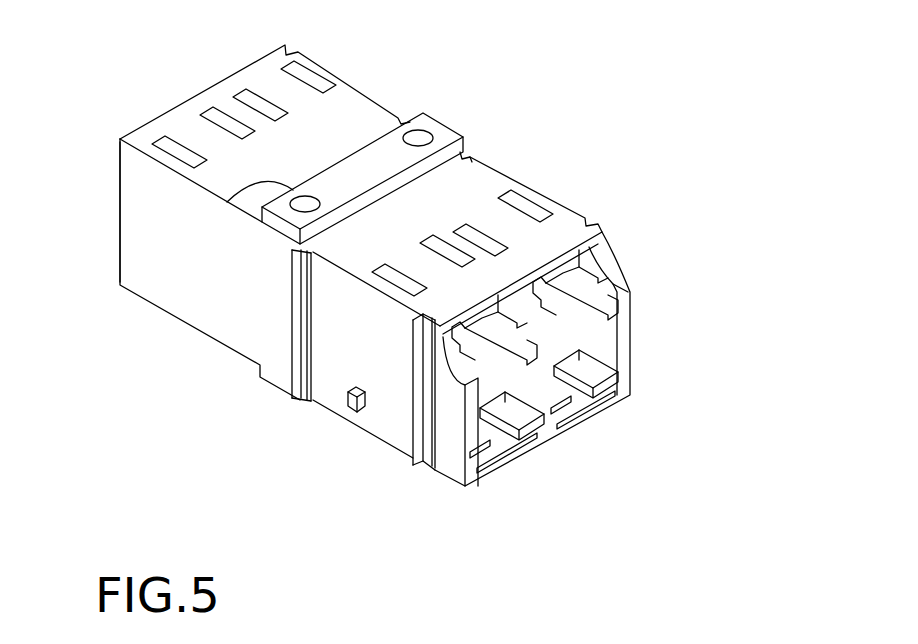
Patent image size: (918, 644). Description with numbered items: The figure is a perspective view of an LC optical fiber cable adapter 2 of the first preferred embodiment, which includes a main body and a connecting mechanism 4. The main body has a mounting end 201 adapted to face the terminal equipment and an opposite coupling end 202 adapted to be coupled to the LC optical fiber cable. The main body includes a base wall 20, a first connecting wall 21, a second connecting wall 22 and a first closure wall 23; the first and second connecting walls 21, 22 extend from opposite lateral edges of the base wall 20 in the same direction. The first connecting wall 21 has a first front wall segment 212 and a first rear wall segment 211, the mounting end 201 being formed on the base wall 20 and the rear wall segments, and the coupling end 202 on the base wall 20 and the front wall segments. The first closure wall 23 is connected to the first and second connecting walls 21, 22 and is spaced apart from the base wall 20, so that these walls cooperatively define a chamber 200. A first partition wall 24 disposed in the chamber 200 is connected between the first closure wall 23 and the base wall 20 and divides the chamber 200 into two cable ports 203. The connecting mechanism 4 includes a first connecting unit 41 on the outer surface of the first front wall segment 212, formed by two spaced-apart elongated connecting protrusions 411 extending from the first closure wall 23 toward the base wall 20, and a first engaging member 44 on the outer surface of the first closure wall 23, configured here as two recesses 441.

The LC optical fiber cable adapter 2 is at (552, 102).
The base wall 20 is at (483, 487).
The chamber 200 is at (630, 352).
The mounting end 201 is at (176, 92).
The coupling end 202 is at (648, 268).
The cable port 203 is at (508, 448).
The first connecting wall 21 is at (210, 335).
The first rear wall segment 211 is at (162, 292).
The first front wall segment 212 is at (397, 433).
The second connecting wall 22 is at (632, 315).
The first closure wall 23 is at (500, 178).
The first partition wall 24 is at (550, 380).
The connecting mechanism 4 is at (257, 410).
The first connecting unit 41 is at (299, 430).
The connecting protrusion 411 is at (303, 400).
The first engaging member 44 is at (450, 104).
The recess 441 is at (417, 135).